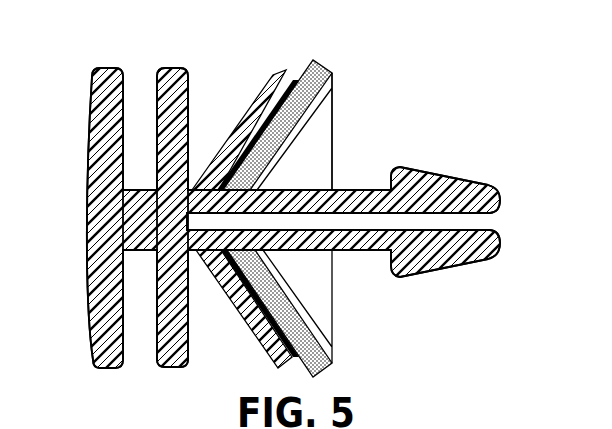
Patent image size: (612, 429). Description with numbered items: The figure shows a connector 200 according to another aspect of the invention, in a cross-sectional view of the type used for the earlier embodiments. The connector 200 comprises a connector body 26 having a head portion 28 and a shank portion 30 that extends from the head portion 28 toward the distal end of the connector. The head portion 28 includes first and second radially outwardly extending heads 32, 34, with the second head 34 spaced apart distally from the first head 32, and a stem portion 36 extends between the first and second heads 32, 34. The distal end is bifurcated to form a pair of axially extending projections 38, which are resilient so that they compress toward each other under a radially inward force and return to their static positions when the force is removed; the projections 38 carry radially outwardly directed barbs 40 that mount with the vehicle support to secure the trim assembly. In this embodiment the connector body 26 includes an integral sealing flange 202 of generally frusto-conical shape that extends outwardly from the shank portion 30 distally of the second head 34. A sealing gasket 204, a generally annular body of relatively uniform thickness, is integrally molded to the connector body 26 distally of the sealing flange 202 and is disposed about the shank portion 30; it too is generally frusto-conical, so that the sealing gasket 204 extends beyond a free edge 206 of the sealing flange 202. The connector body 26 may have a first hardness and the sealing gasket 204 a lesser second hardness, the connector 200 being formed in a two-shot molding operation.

The connector body 26 is at (296, 178).
The head portion 28 is at (138, 68).
The shank portion 30 is at (358, 178).
The first head 32 is at (92, 92).
The second head 34 is at (185, 66).
The stem portion 36 is at (122, 262).
The axially extending projections 38 is at (390, 188).
The barbs 40 is at (404, 167).
The connector 200 is at (328, 193).
The sealing flange 202 is at (273, 75).
The sealing gasket 204 is at (332, 72).
The free edge 206 is at (292, 79).